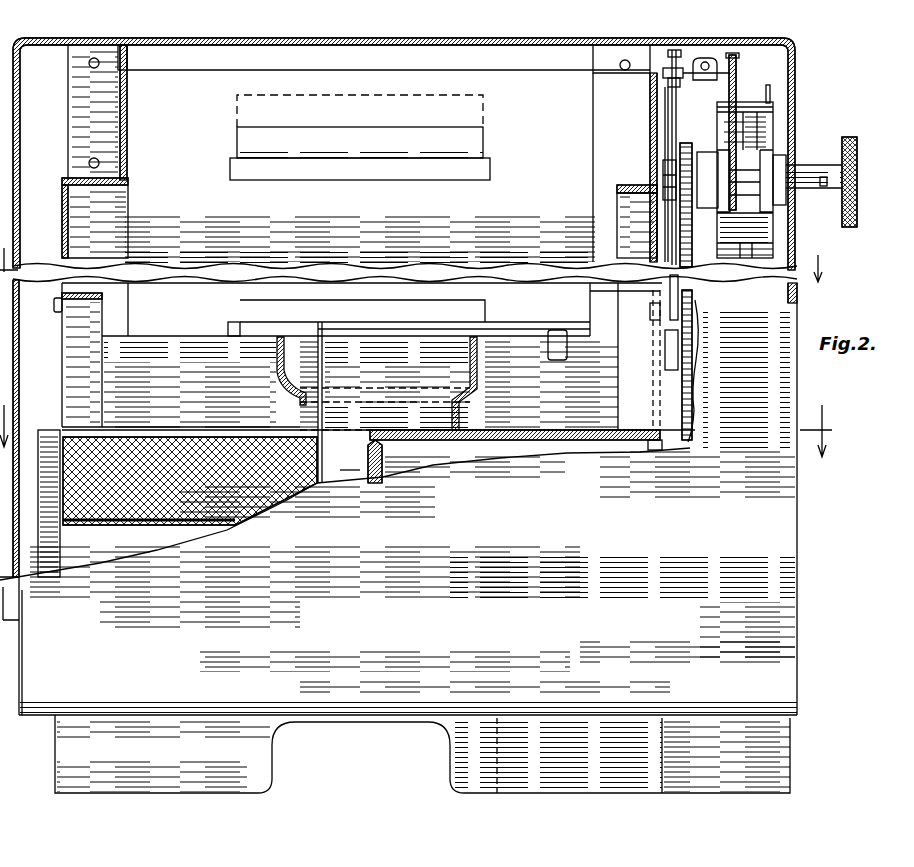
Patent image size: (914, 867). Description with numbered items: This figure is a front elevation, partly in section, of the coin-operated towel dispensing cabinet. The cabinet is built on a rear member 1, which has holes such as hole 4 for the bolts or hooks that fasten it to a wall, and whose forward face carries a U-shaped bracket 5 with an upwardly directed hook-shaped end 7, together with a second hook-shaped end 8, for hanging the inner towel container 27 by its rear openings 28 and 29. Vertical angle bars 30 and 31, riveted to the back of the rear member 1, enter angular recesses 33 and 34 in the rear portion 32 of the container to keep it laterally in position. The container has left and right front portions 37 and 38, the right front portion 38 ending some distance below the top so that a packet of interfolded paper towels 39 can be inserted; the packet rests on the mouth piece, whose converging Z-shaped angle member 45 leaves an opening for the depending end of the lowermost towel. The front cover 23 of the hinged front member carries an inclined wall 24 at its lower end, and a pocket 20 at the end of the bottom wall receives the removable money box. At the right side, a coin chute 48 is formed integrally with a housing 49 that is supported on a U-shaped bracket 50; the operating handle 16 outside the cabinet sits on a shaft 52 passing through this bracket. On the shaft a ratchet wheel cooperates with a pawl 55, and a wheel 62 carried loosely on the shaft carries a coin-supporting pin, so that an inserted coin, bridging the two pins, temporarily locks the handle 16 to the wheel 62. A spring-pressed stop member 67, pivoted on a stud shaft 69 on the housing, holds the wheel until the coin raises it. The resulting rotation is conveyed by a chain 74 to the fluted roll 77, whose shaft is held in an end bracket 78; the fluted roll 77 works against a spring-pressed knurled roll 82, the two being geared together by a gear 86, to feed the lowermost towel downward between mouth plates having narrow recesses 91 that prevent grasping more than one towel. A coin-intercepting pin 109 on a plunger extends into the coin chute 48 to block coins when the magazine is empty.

The rear member 1 is at (776, 80).
The hole 4 is at (416, 441).
The U-shaped bracket 5 is at (470, 115).
The hook-shaped end 7 is at (470, 143).
The hook-shaped end 8 is at (478, 320).
The operating handle 16 is at (850, 228).
The pocket 20 is at (717, 782).
The front cover 23 is at (398, 511).
The inclined wall 24 is at (47, 697).
The towel container 27 is at (652, 118).
The opening 28 is at (245, 170).
The opening 29 is at (229, 329).
The vertical angle bar 30 is at (80, 82).
The vertical angle bar 31 is at (608, 60).
The rear portion 32 is at (360, 235).
The angular recess 33 is at (95, 195).
The angular recess 34 is at (650, 183).
The left front portion 37 is at (88, 315).
The right front portion 38 is at (633, 222).
The packet of interfolded paper towels 39 is at (549, 330).
The Z-shaped angle member 45 is at (287, 379).
The coin chute 48 is at (735, 78).
The housing 49 is at (752, 133).
The U-shaped bracket 50 is at (663, 170).
The shaft 52 is at (803, 176).
The pawl 55 is at (771, 96).
The wheel 62 is at (706, 208).
The stop member 67 is at (728, 134).
The stud shaft 69 is at (752, 195).
The chain 74 is at (690, 298).
The fluted roll 77 is at (423, 460).
The end bracket 78 is at (50, 437).
The knurled roll 82 is at (112, 518).
The gear 86 is at (655, 448).
The recess 91 is at (278, 740).
The coin-intercepting pin 109 is at (722, 77).